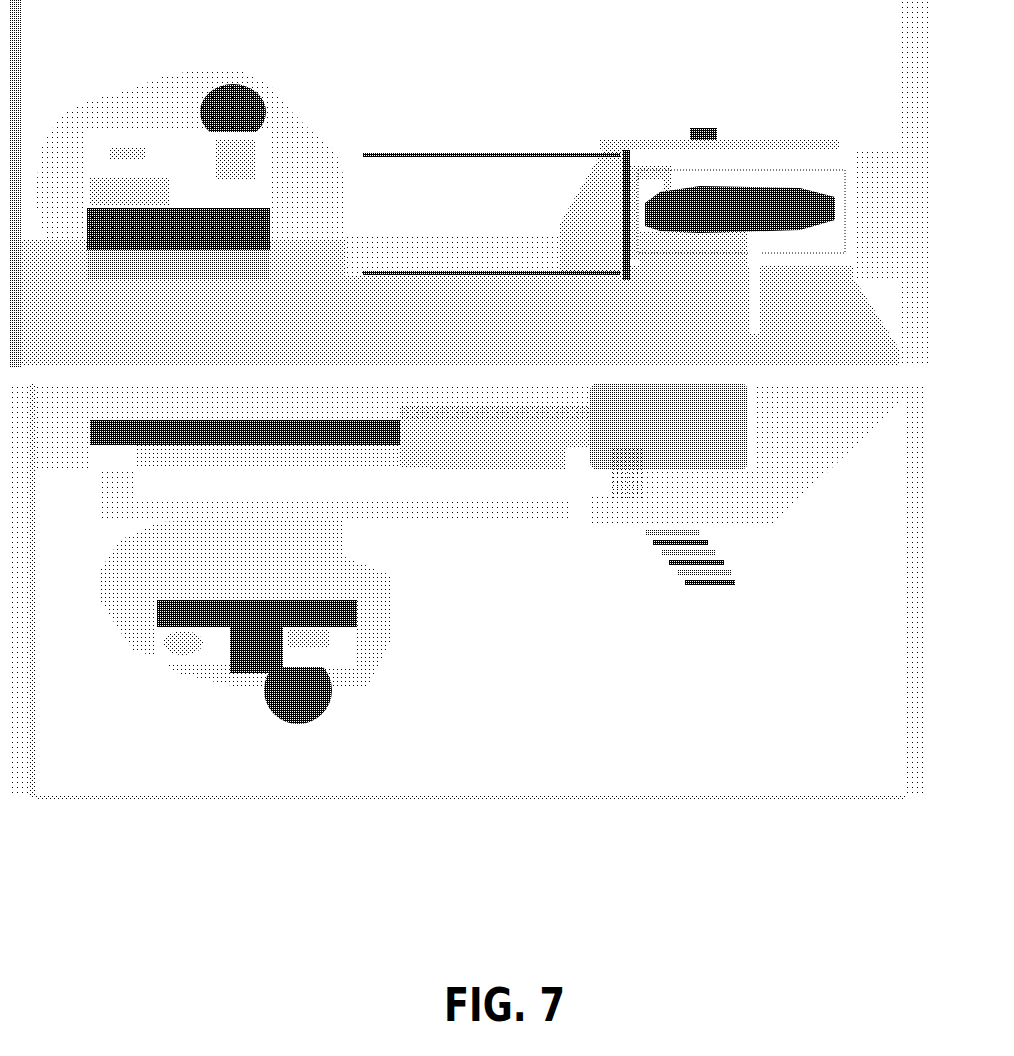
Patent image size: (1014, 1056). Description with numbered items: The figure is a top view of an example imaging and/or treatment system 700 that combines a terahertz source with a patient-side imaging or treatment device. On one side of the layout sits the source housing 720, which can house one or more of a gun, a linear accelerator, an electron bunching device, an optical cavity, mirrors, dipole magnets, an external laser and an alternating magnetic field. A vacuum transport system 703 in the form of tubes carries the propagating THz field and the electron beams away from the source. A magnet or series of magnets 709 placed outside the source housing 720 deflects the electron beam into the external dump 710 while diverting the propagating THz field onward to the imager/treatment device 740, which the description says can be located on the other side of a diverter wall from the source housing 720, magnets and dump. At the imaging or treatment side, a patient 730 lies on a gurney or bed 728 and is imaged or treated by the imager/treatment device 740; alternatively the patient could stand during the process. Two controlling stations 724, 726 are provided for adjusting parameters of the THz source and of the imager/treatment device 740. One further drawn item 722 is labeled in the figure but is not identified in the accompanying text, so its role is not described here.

The imaging and/or treatment system 700 is at (463, 372).
The vacuum transport system 703 is at (522, 472).
The series of magnets 709 is at (568, 483).
The external dump 710 is at (705, 613).
The source housing 720 is at (192, 486).
The housing 722 is at (240, 367).
The controlling station 724 is at (298, 633).
The controlling station 726 is at (157, 153).
The gurney or bed 728 is at (793, 160).
The patient 730 is at (707, 215).
The imager/treatment device 740 is at (757, 264).